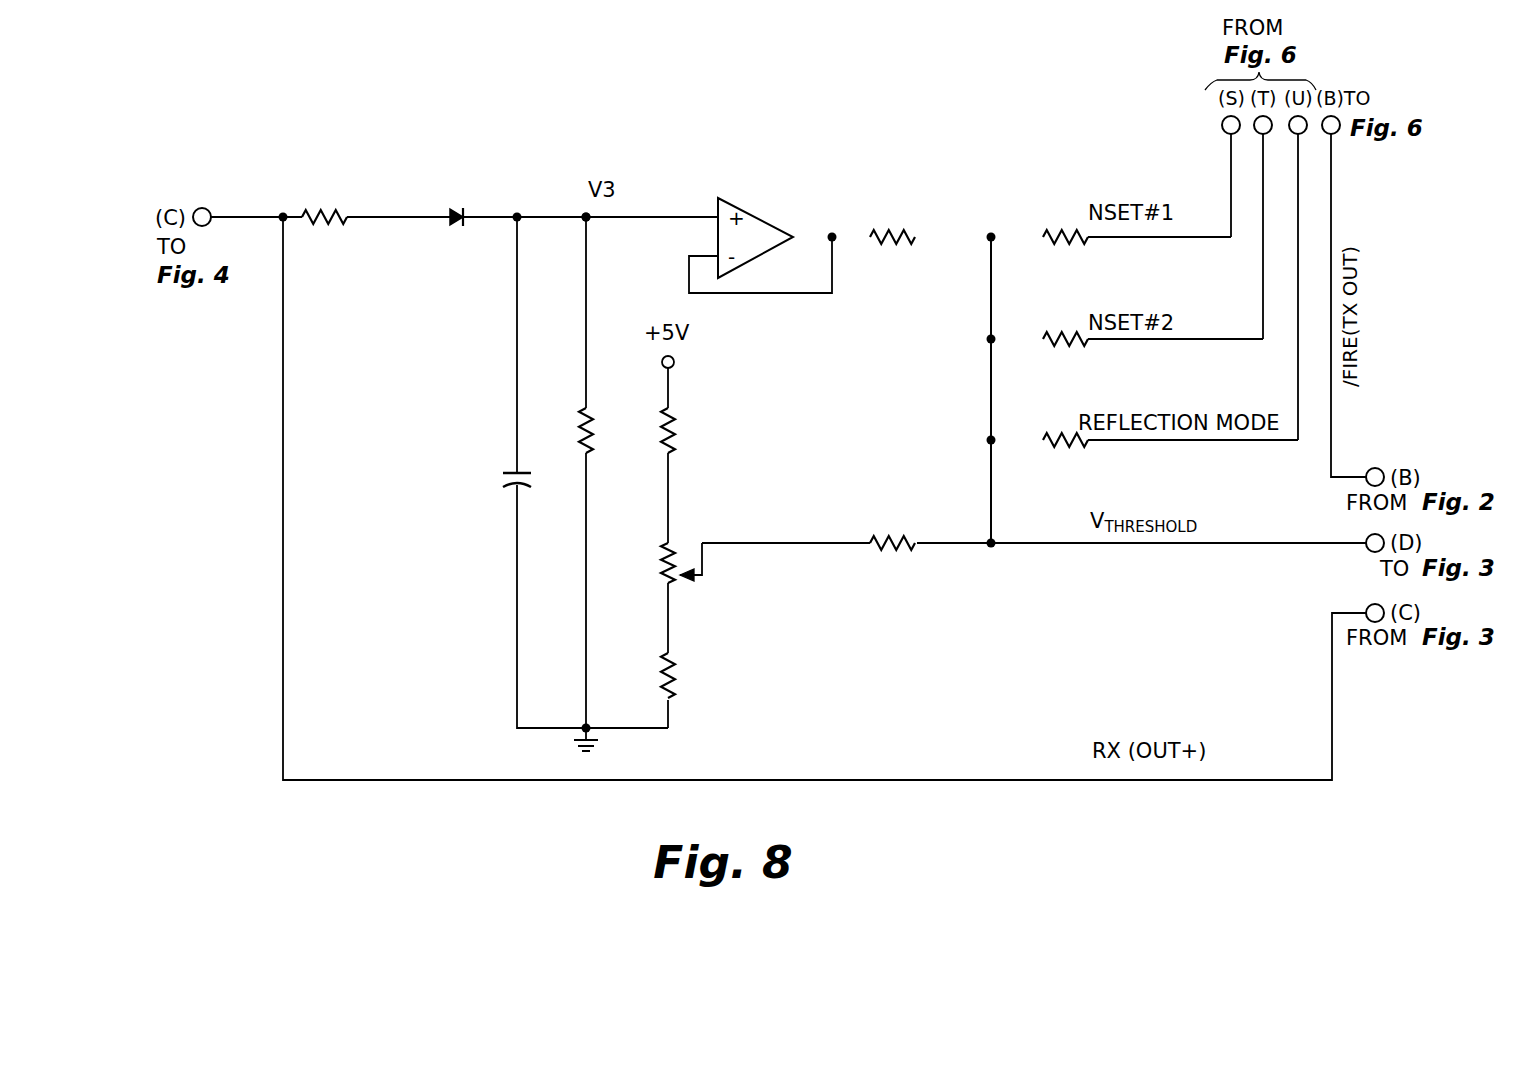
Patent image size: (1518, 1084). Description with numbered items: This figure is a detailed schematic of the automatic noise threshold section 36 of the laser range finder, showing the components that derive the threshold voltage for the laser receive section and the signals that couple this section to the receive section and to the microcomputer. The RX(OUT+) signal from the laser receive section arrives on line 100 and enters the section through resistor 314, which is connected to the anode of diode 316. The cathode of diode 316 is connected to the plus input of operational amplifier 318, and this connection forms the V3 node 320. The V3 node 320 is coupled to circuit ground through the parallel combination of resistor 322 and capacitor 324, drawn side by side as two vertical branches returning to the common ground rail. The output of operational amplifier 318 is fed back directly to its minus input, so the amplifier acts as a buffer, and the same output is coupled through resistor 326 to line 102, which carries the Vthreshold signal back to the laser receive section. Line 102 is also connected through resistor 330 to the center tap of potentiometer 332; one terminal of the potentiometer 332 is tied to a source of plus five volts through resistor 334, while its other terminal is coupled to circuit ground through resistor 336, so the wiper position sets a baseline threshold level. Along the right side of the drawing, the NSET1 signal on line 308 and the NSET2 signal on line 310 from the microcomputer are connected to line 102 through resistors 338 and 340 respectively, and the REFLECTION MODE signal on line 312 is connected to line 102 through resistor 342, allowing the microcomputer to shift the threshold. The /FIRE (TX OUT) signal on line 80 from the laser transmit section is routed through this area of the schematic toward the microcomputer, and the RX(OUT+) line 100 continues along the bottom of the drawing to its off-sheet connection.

The automatic noise threshold section 36 is at (328, 795).
The /FIRE signal line 80 is at (1331, 197).
The RX(OUT+) signal line 100 is at (207, 207).
The Vthreshold line 102 is at (990, 424).
The NSET1 signal line 308 is at (1229, 174).
The NSET2 signal line 310 is at (1258, 217).
The REFLECTION MODE signal line 312 is at (1298, 308).
The resistor 314 is at (306, 212).
The diode 316 is at (452, 210).
The operational amplifier 318 is at (722, 205).
The V3 node 320 is at (583, 212).
The resistor 322 is at (594, 437).
The capacitor 324 is at (507, 473).
The resistor 326 is at (872, 232).
The resistor 330 is at (917, 540).
The potentiometer 332 is at (670, 545).
The resistor 334 is at (674, 437).
The resistor 336 is at (675, 670).
The resistor 338 is at (1046, 232).
The resistor 340 is at (1046, 334).
The resistor 342 is at (1046, 435).